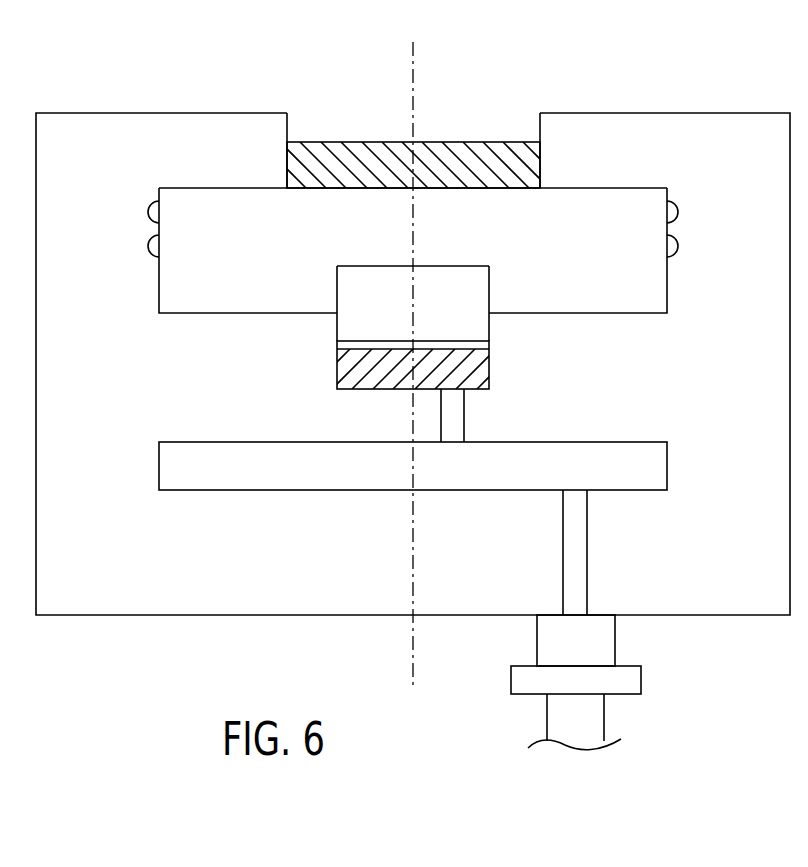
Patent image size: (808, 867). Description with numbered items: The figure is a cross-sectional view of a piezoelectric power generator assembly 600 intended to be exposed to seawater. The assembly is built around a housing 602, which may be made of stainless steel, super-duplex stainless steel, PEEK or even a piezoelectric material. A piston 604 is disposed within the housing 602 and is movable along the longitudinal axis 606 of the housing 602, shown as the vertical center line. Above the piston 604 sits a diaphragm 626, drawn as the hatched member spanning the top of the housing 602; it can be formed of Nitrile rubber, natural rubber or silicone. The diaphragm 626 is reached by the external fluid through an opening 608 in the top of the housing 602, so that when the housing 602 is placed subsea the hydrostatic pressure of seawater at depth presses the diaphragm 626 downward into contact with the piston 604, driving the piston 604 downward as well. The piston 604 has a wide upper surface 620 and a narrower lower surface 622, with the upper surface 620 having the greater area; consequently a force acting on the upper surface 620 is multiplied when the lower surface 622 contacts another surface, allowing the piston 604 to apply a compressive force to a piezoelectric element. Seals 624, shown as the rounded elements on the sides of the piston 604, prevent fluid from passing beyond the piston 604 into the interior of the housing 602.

The piezoelectric power generator assembly 600 is at (673, 52).
The housing 602 is at (710, 381).
The piston 604 is at (616, 241).
The longitudinal axis 606 is at (414, 82).
The opening 608 is at (288, 127).
The upper surface 620 is at (590, 187).
The lower surface 622 is at (365, 343).
The seals 624 is at (673, 209).
The diaphragm 626 is at (491, 142).